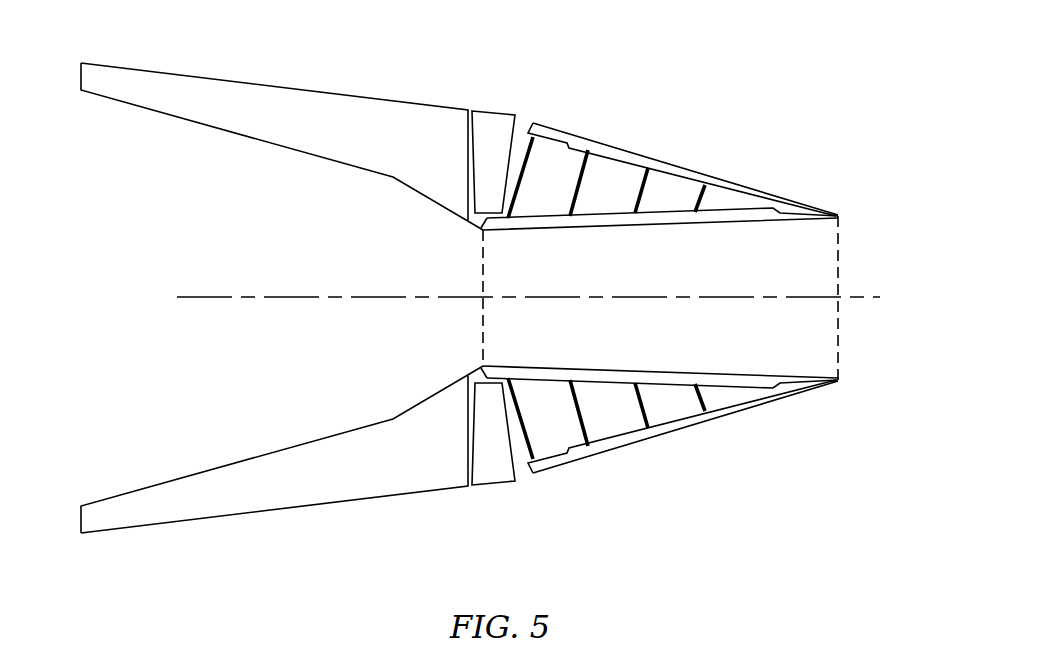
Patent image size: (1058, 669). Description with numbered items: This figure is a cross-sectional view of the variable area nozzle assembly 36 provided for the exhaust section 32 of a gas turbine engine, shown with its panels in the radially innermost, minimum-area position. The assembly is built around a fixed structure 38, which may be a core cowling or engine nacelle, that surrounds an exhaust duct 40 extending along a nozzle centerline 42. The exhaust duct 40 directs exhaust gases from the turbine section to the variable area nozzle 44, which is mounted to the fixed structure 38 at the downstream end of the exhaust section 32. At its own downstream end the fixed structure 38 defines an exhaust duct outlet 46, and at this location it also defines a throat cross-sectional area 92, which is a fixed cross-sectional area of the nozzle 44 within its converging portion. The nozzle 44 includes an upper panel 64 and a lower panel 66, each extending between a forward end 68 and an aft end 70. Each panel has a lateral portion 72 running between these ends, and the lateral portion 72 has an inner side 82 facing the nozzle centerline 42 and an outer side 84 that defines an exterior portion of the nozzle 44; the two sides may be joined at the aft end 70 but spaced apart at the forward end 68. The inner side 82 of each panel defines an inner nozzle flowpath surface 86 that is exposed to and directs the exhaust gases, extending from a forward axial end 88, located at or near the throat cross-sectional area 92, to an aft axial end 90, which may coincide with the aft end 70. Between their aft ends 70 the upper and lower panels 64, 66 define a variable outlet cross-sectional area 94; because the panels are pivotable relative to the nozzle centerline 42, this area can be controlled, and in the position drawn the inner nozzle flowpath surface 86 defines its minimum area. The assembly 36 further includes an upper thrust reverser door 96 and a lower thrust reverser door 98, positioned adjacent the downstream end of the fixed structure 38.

The exhaust section 32 is at (819, 476).
The variable area nozzle assembly 36 is at (862, 118).
The fixed structure 38 is at (296, 102).
The exhaust duct 40 is at (211, 285).
The nozzle centerline 42 is at (868, 297).
The variable area nozzle 44 is at (724, 158).
The exhaust duct outlet 46 is at (441, 270).
The upper panel 64 is at (660, 187).
The lower panel 66 is at (668, 408).
The forward end 68 is at (494, 299).
The aft end 70 is at (850, 212).
The lateral portion 72 is at (683, 296).
The inner side 82 is at (740, 234).
The outer side 84 is at (640, 449).
The inner nozzle flowpath surface 86 is at (657, 367).
The forward axial end 88 is at (495, 240).
The aft axial end 90 is at (836, 371).
The throat cross-sectional area 92 is at (482, 338).
The outlet cross-sectional area 94 is at (840, 358).
The upper thrust reverser door 96 is at (487, 120).
The lower thrust reverser door 98 is at (487, 460).